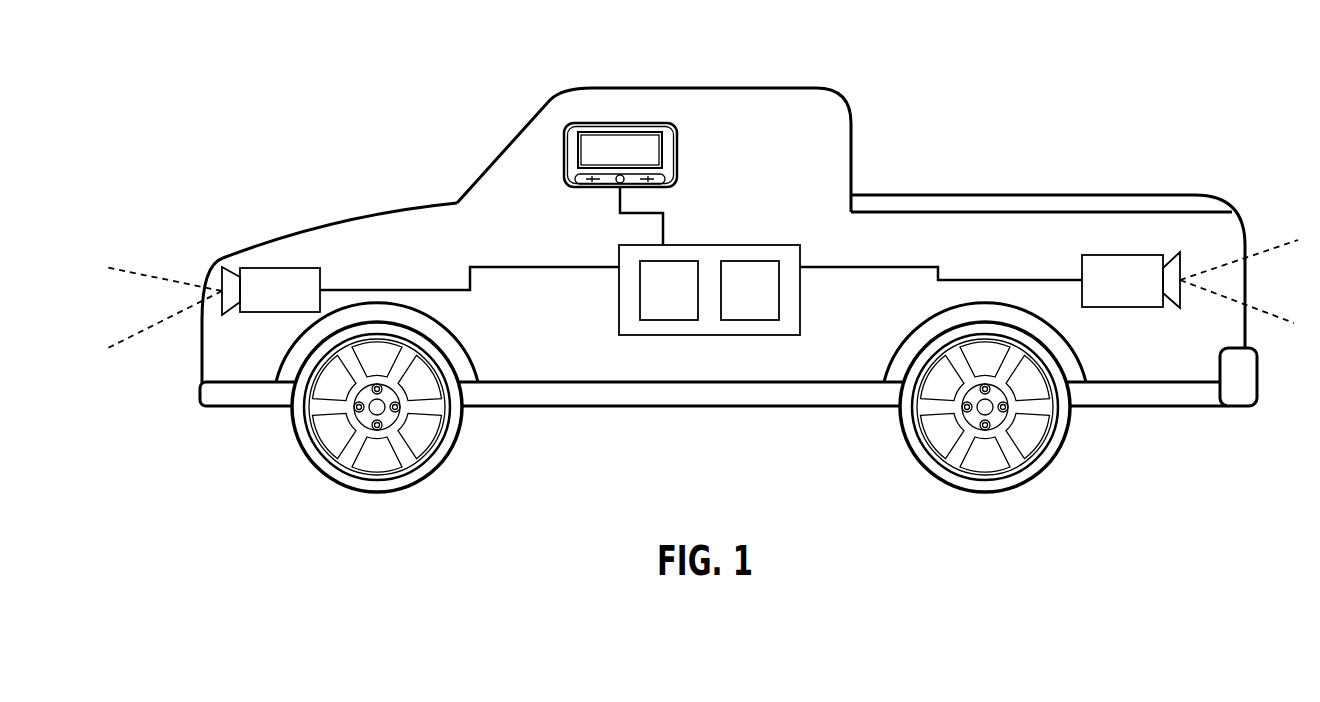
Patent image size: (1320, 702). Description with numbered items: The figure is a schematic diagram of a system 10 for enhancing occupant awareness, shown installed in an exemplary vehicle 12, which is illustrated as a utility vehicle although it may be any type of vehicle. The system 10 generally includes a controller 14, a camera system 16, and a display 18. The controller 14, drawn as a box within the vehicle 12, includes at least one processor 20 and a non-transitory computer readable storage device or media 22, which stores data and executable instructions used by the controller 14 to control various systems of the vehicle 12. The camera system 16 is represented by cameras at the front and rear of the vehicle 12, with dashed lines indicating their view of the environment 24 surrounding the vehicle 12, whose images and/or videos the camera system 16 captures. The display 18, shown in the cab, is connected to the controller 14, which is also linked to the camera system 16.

The system for enhancing occupant awareness 10 is at (728, 263).
The vehicle 12 is at (843, 93).
The controller 14 is at (750, 302).
The camera system 16 is at (259, 310).
The display 18 is at (578, 184).
The processor 20 is at (649, 310).
The non-transitory computer readable storage device or media 22 is at (730, 310).
The environment 24 is at (243, 122).